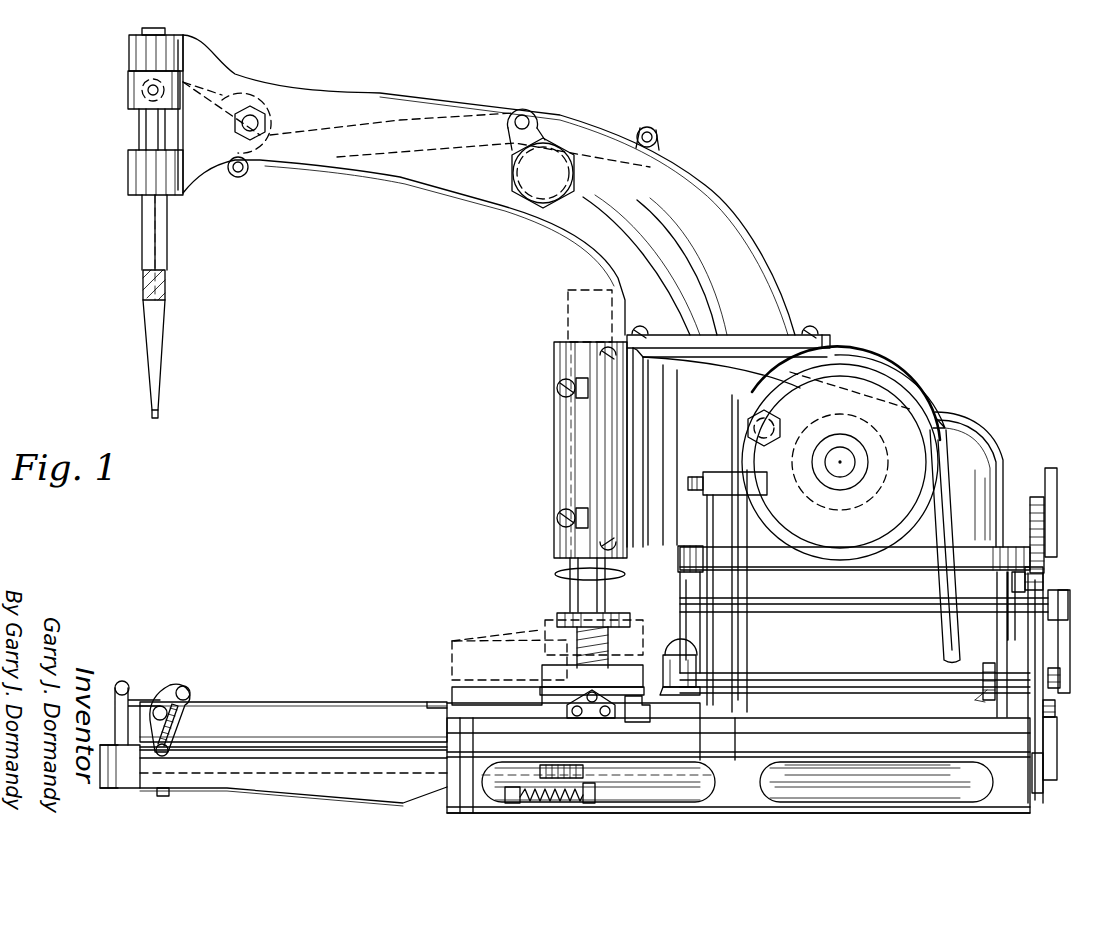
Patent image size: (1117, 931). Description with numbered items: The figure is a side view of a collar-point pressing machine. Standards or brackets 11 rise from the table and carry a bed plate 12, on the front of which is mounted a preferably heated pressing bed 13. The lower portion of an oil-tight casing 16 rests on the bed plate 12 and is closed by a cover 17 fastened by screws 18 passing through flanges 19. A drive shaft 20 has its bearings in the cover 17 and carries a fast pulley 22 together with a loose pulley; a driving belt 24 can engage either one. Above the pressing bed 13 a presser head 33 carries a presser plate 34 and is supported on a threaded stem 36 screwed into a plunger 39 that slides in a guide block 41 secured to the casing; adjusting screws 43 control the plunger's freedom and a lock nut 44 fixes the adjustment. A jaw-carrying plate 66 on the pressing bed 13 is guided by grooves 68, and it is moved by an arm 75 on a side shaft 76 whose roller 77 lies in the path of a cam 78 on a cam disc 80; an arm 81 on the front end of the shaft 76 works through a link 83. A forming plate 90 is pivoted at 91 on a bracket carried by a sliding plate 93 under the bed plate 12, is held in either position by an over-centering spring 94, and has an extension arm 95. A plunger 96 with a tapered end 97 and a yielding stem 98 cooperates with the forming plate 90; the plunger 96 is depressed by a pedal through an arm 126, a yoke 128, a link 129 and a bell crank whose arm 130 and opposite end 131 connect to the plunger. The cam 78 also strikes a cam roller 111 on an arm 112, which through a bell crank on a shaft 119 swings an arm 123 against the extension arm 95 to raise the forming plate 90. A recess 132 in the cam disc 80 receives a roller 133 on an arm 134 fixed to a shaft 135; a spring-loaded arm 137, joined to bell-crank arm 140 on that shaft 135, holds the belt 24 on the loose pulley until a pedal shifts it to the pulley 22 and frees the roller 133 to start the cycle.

The standards or brackets 11 is at (460, 798).
The bed plate 12 is at (778, 725).
The pressing bed 13 is at (440, 710).
The oil-tight casing 16 is at (885, 722).
The cover 17 is at (985, 450).
The screws 18 is at (690, 545).
The flanges 19 is at (780, 560).
The drive shaft 20 is at (845, 460).
The pulley 22 is at (930, 475).
The belt 24 is at (948, 507).
The presser head 33 is at (540, 672).
The presser plate 34 is at (470, 675).
The stem 36 is at (545, 628).
The plunger 39 is at (556, 566).
The guide block 41 is at (552, 452).
The adjusting screws 43 is at (535, 525).
The lock nut 44 is at (555, 618).
The plate 66 is at (612, 712).
The grooves 68 is at (635, 722).
The arm 75 is at (1064, 625).
The shaft 76 is at (875, 600).
The roller 77 is at (1060, 676).
The cam 78 is at (1052, 505).
The cam disc 80 is at (1040, 530).
The arm 81 is at (676, 660).
The link 83 is at (672, 650).
The forming plate 90 is at (372, 680).
The pivot 91 is at (178, 684).
The sliding plate 93 is at (355, 740).
The over-centering spring 94 is at (225, 712).
The extension arm 95 is at (138, 662).
The plunger 96 is at (168, 220).
The tapered end 97 is at (157, 350).
The stem 98 is at (158, 415).
The cam roller 111 is at (1055, 705).
The arm 112 is at (1050, 725).
The shaft 119 is at (1040, 790).
The arm 123 is at (128, 722).
The arm 126 is at (658, 140).
The yoke 128 is at (555, 125).
The link 129 is at (300, 175).
The bell crank arm 130 is at (244, 176).
The bell crank end 131 is at (232, 80).
The recess 132 is at (1045, 565).
The roller 133 is at (1040, 585).
The arm 134 is at (965, 688).
The shaft 135 is at (976, 673).
The arm 137 is at (720, 470).
The bell crank arm 140 is at (750, 642).